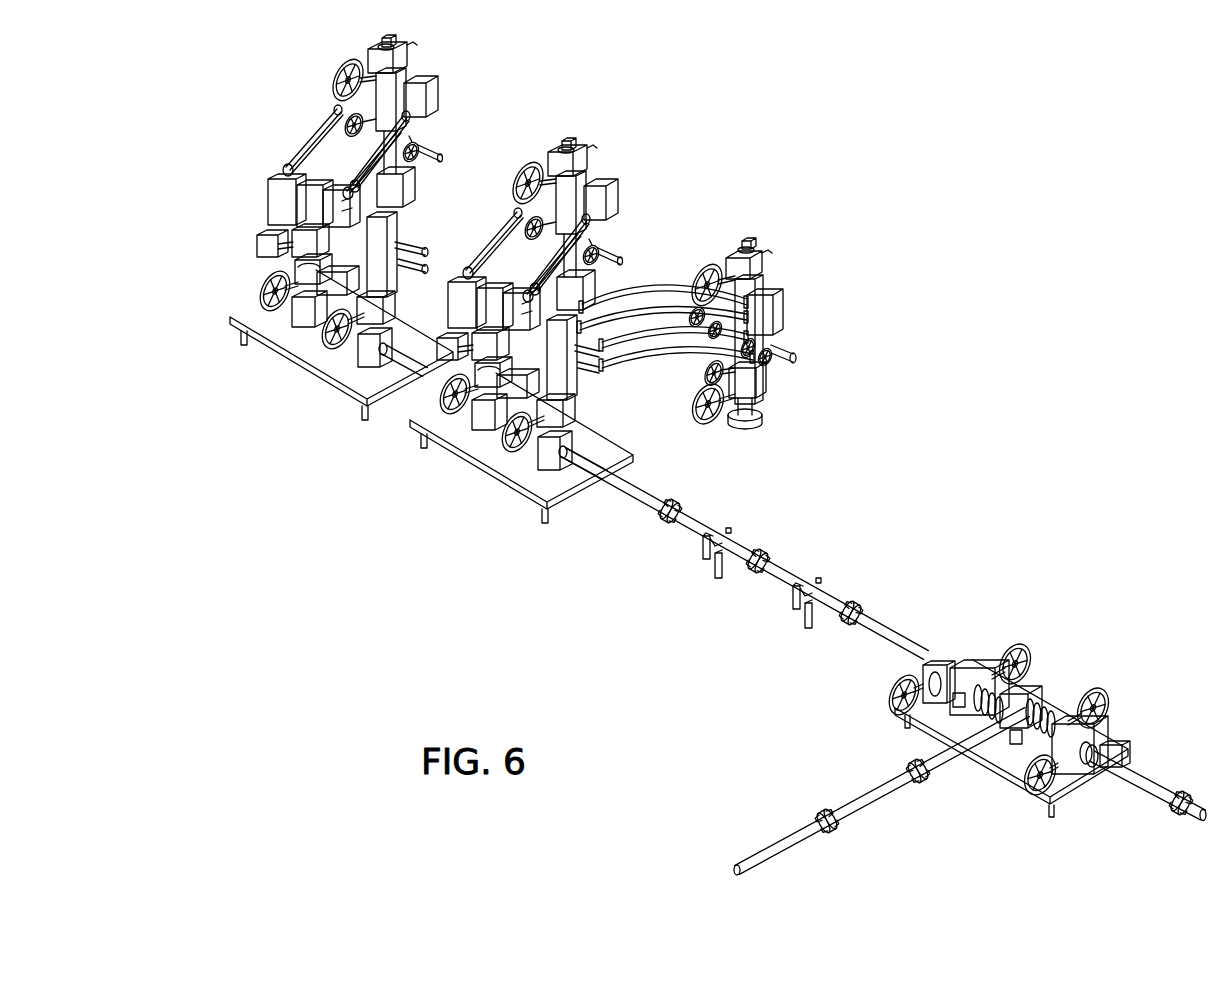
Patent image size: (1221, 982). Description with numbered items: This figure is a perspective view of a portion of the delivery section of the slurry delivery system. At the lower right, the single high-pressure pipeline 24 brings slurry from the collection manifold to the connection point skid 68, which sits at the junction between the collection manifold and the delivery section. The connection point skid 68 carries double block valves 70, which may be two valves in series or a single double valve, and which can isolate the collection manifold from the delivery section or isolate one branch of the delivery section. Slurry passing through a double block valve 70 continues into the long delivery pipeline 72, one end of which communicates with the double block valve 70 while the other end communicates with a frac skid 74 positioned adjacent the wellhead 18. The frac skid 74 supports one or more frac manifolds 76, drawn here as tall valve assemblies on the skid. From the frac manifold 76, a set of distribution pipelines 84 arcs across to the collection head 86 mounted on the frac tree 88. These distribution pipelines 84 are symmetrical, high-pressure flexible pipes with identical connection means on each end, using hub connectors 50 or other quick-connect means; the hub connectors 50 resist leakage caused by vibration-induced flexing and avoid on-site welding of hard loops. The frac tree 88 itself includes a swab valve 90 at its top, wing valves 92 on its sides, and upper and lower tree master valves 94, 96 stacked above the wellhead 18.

The wellhead 18 is at (755, 427).
The high-pressure pipeline 24 is at (863, 788).
The hub connectors 50 is at (664, 286).
The connection point skid 68 is at (1014, 699).
The double block valve 70 is at (988, 635).
The delivery pipeline 72 is at (787, 570).
The frac skid 74 is at (467, 493).
The frac manifold 76 is at (561, 275).
The distribution pipelines 84 is at (662, 290).
The collection head 86 is at (752, 292).
The frac tree 88 is at (773, 356).
The swab valve 90 is at (573, 147).
The wing valves 92 is at (595, 262).
The upper tree master valve 94 is at (707, 372).
The lower tree master valve 96 is at (758, 388).